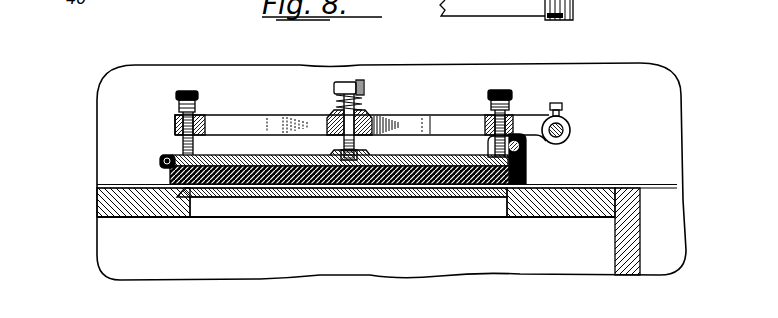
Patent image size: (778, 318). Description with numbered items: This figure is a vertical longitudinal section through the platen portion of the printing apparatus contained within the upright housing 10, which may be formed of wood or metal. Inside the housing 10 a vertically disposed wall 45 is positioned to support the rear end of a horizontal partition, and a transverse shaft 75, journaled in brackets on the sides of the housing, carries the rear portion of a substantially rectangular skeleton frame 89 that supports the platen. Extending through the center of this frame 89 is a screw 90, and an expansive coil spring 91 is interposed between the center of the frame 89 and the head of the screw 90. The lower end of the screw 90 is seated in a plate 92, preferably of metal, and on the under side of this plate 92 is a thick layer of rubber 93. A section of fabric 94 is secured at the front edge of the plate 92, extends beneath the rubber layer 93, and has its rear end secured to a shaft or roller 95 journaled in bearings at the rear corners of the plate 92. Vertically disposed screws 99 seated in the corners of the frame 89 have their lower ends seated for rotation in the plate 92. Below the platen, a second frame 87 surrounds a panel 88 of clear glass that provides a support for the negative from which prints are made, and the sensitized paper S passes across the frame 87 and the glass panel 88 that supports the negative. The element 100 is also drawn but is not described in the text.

The housing 10 is at (136, 270).
The sensitized paper S is at (98, 190).
The vertically disposed wall 45 is at (628, 252).
The shaft 75 is at (571, 128).
The second frame 87 is at (593, 208).
The panel of clear glass 88 is at (417, 197).
The skeleton frame 89 is at (438, 122).
The screw 90 is at (333, 84).
The expansive coil spring 91 is at (362, 96).
The plate 92 is at (257, 160).
The layer of rubber 93 is at (218, 197).
The section of fabric 94 is at (160, 167).
The shaft or roller 95 is at (514, 140).
The vertically disposed screws 99 is at (177, 94).
The arm 100 is at (533, 10).